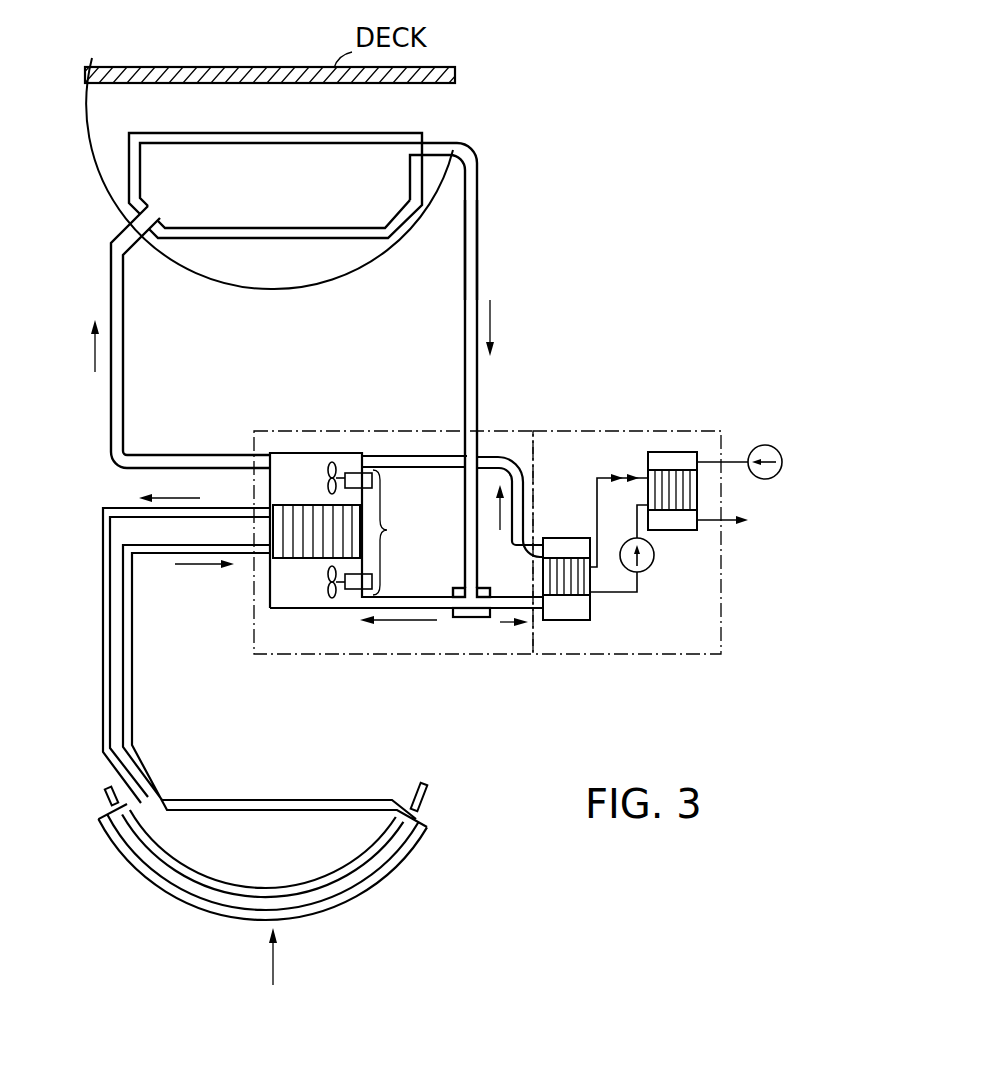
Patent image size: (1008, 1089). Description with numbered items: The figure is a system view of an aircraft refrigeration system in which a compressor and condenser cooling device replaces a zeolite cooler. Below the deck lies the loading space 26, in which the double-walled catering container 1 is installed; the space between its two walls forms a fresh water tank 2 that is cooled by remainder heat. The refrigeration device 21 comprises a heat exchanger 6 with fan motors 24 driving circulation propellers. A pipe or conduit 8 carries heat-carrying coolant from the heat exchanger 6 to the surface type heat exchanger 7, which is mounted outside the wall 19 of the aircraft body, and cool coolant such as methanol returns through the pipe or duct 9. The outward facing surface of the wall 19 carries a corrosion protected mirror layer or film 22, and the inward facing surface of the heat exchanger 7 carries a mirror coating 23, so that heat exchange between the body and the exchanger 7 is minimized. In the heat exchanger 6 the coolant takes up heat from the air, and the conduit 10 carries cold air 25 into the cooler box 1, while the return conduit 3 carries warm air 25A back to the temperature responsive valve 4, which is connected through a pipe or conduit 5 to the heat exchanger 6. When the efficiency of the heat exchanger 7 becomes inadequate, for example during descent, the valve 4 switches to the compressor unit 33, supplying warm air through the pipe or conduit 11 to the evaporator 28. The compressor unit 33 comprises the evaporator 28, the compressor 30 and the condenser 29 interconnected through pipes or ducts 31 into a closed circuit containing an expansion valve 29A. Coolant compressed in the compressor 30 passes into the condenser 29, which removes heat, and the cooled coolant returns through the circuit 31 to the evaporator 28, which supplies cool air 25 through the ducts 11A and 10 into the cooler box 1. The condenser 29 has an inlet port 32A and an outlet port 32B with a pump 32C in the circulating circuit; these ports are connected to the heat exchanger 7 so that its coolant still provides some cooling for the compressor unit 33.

The catering container 1 is at (180, 158).
The fresh water tank 2 is at (360, 132).
The return conduit 3 is at (478, 228).
The valve 4 is at (472, 619).
The pipe or conduit 5 is at (433, 618).
The heat exchanger 6 is at (293, 610).
The surface type heat exchanger 7 is at (177, 900).
The pipe or conduit 8 is at (110, 622).
The pipe or duct 9 is at (133, 683).
The conduit 10 is at (123, 369).
The pipe or conduit 11 is at (505, 610).
The pipe or conduit 11A is at (490, 462).
The wall 19 is at (430, 800).
The refrigeration device 21 is at (358, 431).
The mirror layer or film 22 is at (103, 800).
The mirror coating 23 is at (130, 855).
The fan motors 24 is at (350, 530).
The cold air 25 is at (112, 409).
The warm air 25A is at (468, 281).
The loading space 26 is at (298, 268).
The evaporator 28 is at (572, 610).
The condenser 29 is at (673, 452).
The expansion valve 29A is at (628, 470).
The compressor 30 is at (655, 557).
The pipes or ducts 31 is at (597, 550).
The inlet port 32A is at (722, 463).
The outlet port 32B is at (712, 523).
The pump 32C is at (764, 445).
The compressor unit 33 is at (586, 431).